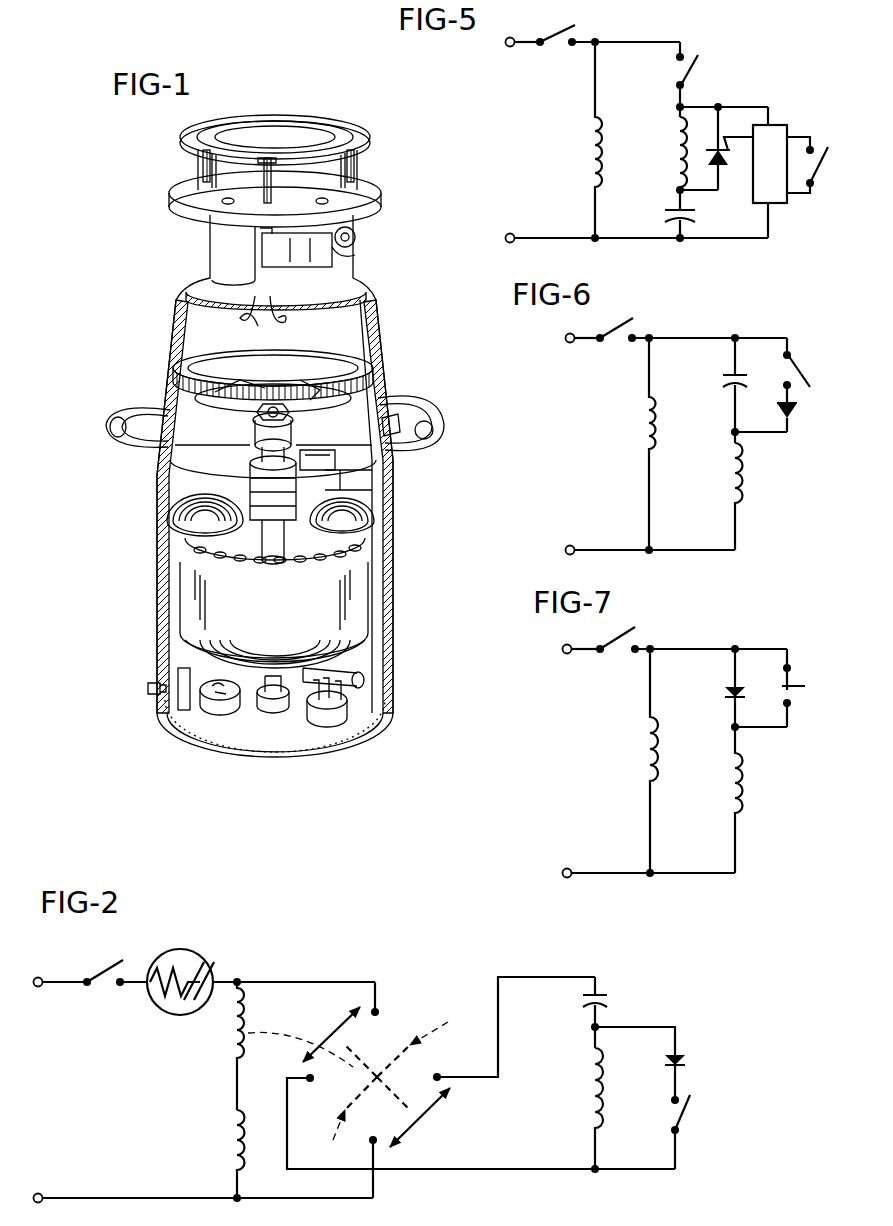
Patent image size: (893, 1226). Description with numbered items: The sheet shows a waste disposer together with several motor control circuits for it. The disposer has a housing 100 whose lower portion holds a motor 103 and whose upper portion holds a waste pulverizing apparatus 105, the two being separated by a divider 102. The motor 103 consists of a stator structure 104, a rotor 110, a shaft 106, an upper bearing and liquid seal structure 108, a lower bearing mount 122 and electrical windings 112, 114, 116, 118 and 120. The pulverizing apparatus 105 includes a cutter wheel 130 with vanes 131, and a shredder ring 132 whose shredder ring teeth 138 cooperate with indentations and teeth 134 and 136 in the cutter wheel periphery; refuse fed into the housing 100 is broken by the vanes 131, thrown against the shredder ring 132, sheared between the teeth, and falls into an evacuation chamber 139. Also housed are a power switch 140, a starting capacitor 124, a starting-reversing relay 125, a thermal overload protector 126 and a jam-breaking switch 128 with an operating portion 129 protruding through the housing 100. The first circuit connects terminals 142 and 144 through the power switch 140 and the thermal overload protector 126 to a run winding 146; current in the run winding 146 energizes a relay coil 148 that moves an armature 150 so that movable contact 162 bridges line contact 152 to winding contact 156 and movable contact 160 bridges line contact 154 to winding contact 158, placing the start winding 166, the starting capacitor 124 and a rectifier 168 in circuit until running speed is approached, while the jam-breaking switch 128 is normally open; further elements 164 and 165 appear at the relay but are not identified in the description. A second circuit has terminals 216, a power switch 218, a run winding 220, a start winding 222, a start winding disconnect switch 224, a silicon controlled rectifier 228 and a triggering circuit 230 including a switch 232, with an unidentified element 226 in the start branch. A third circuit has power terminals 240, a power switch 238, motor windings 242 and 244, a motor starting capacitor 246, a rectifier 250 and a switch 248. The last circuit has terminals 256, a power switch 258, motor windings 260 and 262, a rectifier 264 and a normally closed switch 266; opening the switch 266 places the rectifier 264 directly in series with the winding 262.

In FIG. 1, the housing 100 is at (365, 298).
In FIG. 1, the divider 102 is at (372, 490).
In FIG. 1, the motor 103 is at (292, 616).
In FIG. 1, the stator structure 104 is at (180, 605).
In FIG. 1, the waste pulverizing apparatus 105 is at (188, 379).
In FIG. 1, the shaft 106 is at (350, 385).
In FIG. 1, the upper bearing and liquid seal structure 108 is at (235, 478).
In FIG. 1, the rotor 110 is at (222, 517).
In FIG. 1, the electrical winding 112 is at (235, 553).
In FIG. 1, the electrical winding 114 is at (200, 530).
In FIG. 1, the electrical winding 116 is at (362, 535).
In FIG. 1, the electrical winding 118 is at (335, 556).
In FIG. 1, the electrical winding 120 is at (250, 487).
In FIG. 1, the lower bearing mount 122 is at (271, 706).
In FIG. 1, the starting capacitor 124 is at (358, 688).
In FIG. 2, the starting capacitor 124 is at (607, 1003).
In FIG. 1, the starting-reversing relay 125 is at (325, 720).
In FIG. 2, the starting-reversing relay 125 is at (352, 1000).
In FIG. 1, the thermal overload protector 126 is at (216, 703).
In FIG. 2, the thermal overload protector 126 is at (185, 956).
In FIG. 1, the jam-breaking switch 128 is at (183, 705).
In FIG. 2, the jam-breaking switch 128 is at (685, 1112).
In FIG. 1, the operating portion 129 is at (148, 690).
In FIG. 1, the cutter wheel 130 is at (430, 428).
In FIG. 1, the vanes 131 is at (200, 400).
In FIG. 1, the shredder ring 132 is at (140, 416).
In FIG. 1, the cutter wheel teeth 134 is at (400, 415).
In FIG. 1, the cutter wheel teeth 136 is at (335, 465).
In FIG. 1, the shredder ring teeth 138 is at (237, 388).
In FIG. 1, the evacuation chamber 139 is at (200, 453).
In FIG. 1, the power switch 140 is at (330, 245).
In FIG. 2, the power switch 140 is at (107, 986).
In FIG. 2, the terminal 142 is at (38, 976).
In FIG. 2, the terminal 144 is at (38, 1193).
In FIG. 2, the motor run winding 146 is at (237, 1150).
In FIG. 2, the relay coil 148 is at (237, 1050).
In FIG. 2, the armature 150 is at (380, 1075).
In FIG. 2, the line contact 152 is at (380, 1010).
In FIG. 2, the line contact 154 is at (378, 1146).
In FIG. 2, the winding contact 156 is at (312, 1084).
In FIG. 2, the winding contact 158 is at (440, 1075).
In FIG. 2, the movable contact 160 is at (432, 1115).
In FIG. 2, the movable contact 162 is at (345, 1018).
In FIG. 2, the contact 164 is at (443, 1022).
In FIG. 2, the contact 165 is at (331, 1134).
In FIG. 2, the motor start winding 166 is at (592, 1105).
In FIG. 2, the rectifier 168 is at (690, 1062).
In FIG. 5, the terminals 216 is at (506, 46).
In FIG. 5, the power switch 218 is at (555, 50).
In FIG. 5, the run winding 220 is at (595, 142).
In FIG. 5, the start winding 222 is at (680, 152).
In FIG. 5, the start winding disconnect switch 224 is at (698, 68).
In FIG. 5, the capacitor 226 is at (695, 216).
In FIG. 5, the silicon controlled rectifier 228 is at (716, 146).
In FIG. 5, the silicon controlled rectifier triggering circuit 230 is at (775, 133).
In FIG. 5, the switch 232 is at (822, 180).
In FIG. 6, the power switch 238 is at (617, 348).
In FIG. 6, the power terminals 240 is at (566, 334).
In FIG. 6, the motor winding 242 is at (649, 413).
In FIG. 6, the motor winding 244 is at (735, 473).
In FIG. 6, the motor starting capacitor 246 is at (723, 378).
In FIG. 6, the switch 248 is at (802, 360).
In FIG. 6, the rectifier 250 is at (795, 422).
In FIG. 7, the terminals 256 is at (566, 655).
In FIG. 7, the power switch 258 is at (620, 656).
In FIG. 7, the motor winding 260 is at (650, 760).
In FIG. 7, the motor winding 262 is at (735, 790).
In FIG. 7, the rectifier 264 is at (725, 695).
In FIG. 7, the normally closed switch 266 is at (792, 694).